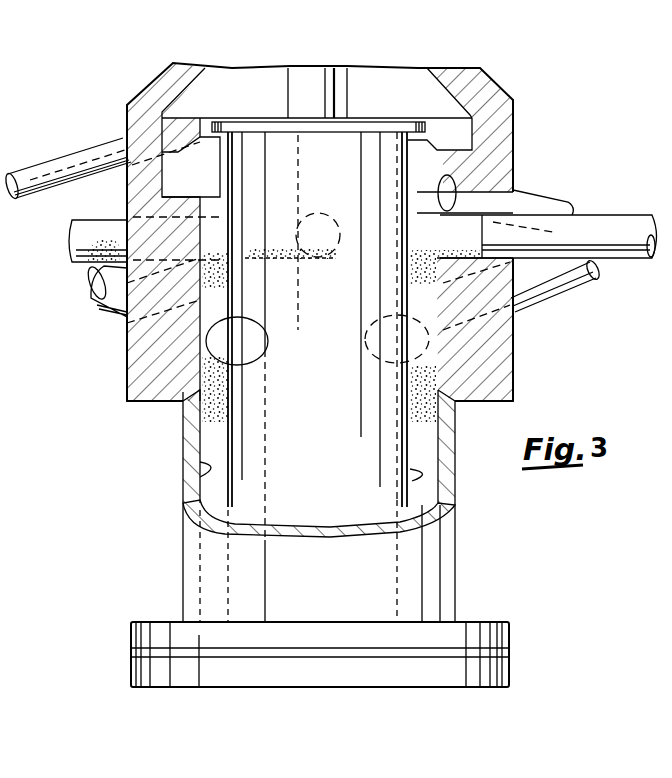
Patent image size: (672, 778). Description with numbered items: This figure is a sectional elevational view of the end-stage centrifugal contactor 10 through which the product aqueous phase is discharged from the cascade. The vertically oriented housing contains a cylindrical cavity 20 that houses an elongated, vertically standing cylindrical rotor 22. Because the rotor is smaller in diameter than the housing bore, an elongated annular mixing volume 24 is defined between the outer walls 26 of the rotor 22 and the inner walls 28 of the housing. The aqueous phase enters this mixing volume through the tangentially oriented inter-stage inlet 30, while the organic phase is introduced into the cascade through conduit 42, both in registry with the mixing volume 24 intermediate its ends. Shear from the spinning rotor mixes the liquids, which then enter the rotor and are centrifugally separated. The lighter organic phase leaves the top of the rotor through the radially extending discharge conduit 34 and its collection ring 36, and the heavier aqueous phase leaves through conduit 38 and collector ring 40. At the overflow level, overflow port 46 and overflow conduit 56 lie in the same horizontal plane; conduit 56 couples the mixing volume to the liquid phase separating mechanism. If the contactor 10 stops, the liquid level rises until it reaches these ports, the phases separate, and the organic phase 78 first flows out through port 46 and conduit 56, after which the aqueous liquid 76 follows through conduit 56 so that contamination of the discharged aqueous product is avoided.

The centrifugal contactor 10 is at (466, 534).
The cavity 20 is at (418, 424).
The rotor 22 is at (341, 300).
The annular mixing volume 24 is at (213, 446).
The outer walls of the rotor 26 is at (410, 469).
The inner walls of the housing 28 is at (200, 462).
The inlet 30 is at (592, 270).
The discharge conduit 34 is at (533, 200).
The collection ring 36 is at (210, 166).
The discharge conduit 38 is at (95, 149).
The collector ring 40 is at (236, 90).
The conduit 42 is at (100, 316).
The overflow port 46 is at (617, 222).
The conduit 56 is at (115, 226).
The aqueous liquid 76 is at (210, 266).
The organic phase 78 is at (222, 255).